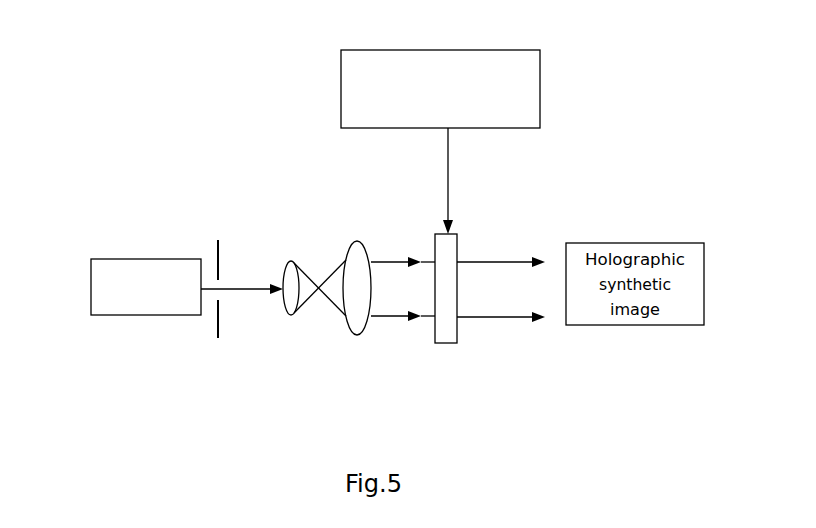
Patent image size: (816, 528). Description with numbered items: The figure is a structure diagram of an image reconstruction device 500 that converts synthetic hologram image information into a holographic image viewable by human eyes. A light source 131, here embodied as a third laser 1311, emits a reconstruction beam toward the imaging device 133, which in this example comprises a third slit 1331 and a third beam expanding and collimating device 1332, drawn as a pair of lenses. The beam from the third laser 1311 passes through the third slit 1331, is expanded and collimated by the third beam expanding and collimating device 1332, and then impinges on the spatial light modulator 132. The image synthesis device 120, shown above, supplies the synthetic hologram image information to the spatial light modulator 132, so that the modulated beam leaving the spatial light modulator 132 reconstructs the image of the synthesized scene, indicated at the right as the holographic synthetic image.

The holographic display system 500 is at (242, 78).
The image synthesis device 120 is at (543, 88).
The laser 131 is at (128, 319).
The third laser 1311 is at (107, 315).
The beam shaping assembly 133 is at (280, 263).
The aperture / slit 1331 is at (214, 274).
The beam expanding lens group 1332 is at (316, 255).
The spatial light modulator 132 is at (447, 338).